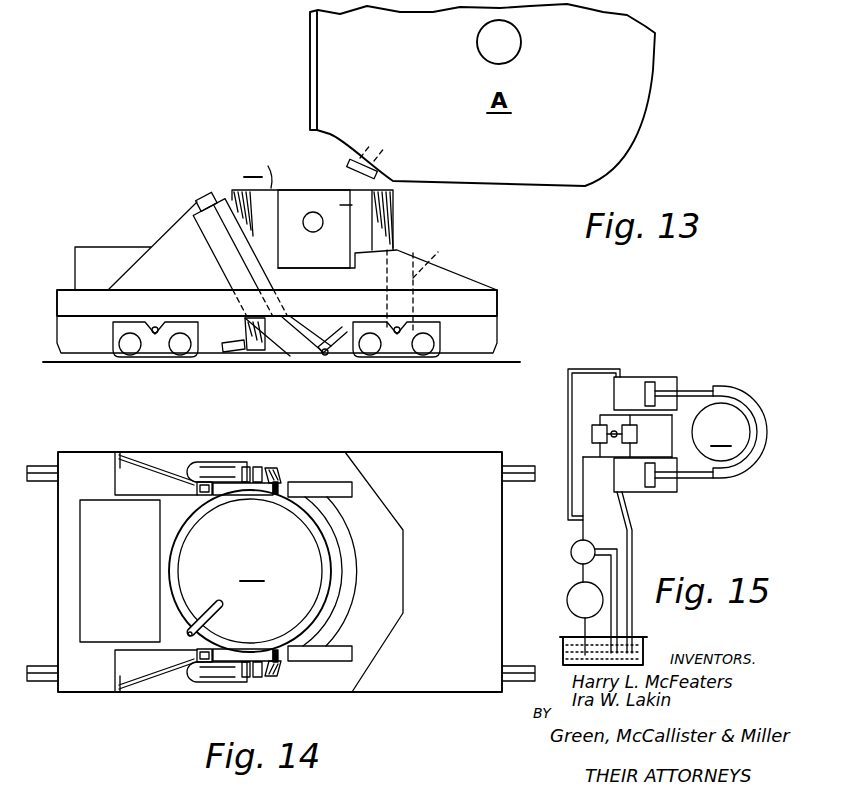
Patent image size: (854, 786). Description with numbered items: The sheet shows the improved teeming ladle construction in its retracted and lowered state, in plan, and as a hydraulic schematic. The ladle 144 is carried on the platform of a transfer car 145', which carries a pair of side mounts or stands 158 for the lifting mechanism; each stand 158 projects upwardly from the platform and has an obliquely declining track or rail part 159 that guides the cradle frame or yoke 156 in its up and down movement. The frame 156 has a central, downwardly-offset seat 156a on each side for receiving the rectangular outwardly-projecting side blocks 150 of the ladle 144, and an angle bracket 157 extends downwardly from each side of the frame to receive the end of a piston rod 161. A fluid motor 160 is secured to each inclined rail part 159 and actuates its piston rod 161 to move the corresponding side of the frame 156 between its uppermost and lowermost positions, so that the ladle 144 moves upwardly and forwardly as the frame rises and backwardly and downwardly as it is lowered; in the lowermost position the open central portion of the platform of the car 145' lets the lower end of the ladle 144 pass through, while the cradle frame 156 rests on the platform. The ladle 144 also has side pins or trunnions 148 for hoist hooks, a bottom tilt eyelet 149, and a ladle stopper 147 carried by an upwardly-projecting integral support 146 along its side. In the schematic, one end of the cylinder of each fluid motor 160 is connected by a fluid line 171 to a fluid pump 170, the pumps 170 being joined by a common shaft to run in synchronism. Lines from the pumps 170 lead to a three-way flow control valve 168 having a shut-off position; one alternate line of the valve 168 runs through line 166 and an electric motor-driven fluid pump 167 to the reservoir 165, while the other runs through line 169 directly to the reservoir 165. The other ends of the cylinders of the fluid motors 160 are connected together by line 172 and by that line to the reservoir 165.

In FIG. 13, the ladle 144 is at (271, 164).
In FIG. 14, the ladle 144 is at (202, 513).
In FIG. 13, the car 145' is at (305, 323).
In FIG. 14, the car 145' is at (281, 587).
In FIG. 14, the support 146 is at (187, 633).
In FIG. 14, the ladle stopper 147 is at (221, 601).
In FIG. 13, the side pins or trunnions 148 is at (283, 170).
In FIG. 14, the side pins or trunnions 148 is at (242, 683).
In FIG. 13, the bottom tilt eyelet 149 is at (228, 356).
In FIG. 13, the side blocks 150 is at (352, 205).
In FIG. 14, the side blocks 150 is at (280, 683).
In FIG. 13, the cradle frame 156 is at (387, 284).
In FIG. 14, the cradle frame 156 is at (379, 509).
In FIG. 15, the cradle frame 156 is at (741, 397).
In FIG. 13, the downwardly-offset seat 156a is at (345, 262).
In FIG. 13, the angle bracket 157 is at (328, 360).
In FIG. 13, the side mounts or stands 158 is at (160, 255).
In FIG. 14, the side mounts or stands 158 is at (130, 670).
In FIG. 13, the track or rail part 159 is at (288, 338).
In FIG. 13, the fluid motor 160 is at (216, 207).
In FIG. 14, the fluid motor 160 is at (207, 683).
In FIG. 15, the fluid motor 160 is at (630, 491).
In FIG. 13, the piston rod 161 is at (300, 333).
In FIG. 15, the piston rod 161 is at (680, 478).
In FIG. 15, the reservoir 165 is at (643, 652).
In FIG. 15, the line 166 is at (582, 573).
In FIG. 15, the fluid pump 167 is at (567, 601).
In FIG. 15, the flow control valve 168 is at (572, 548).
In FIG. 15, the line 169 is at (612, 549).
In FIG. 15, the fluid pump 170 is at (630, 431).
In FIG. 15, the fluid line 171 is at (673, 427).
In FIG. 15, the line 172 is at (633, 552).